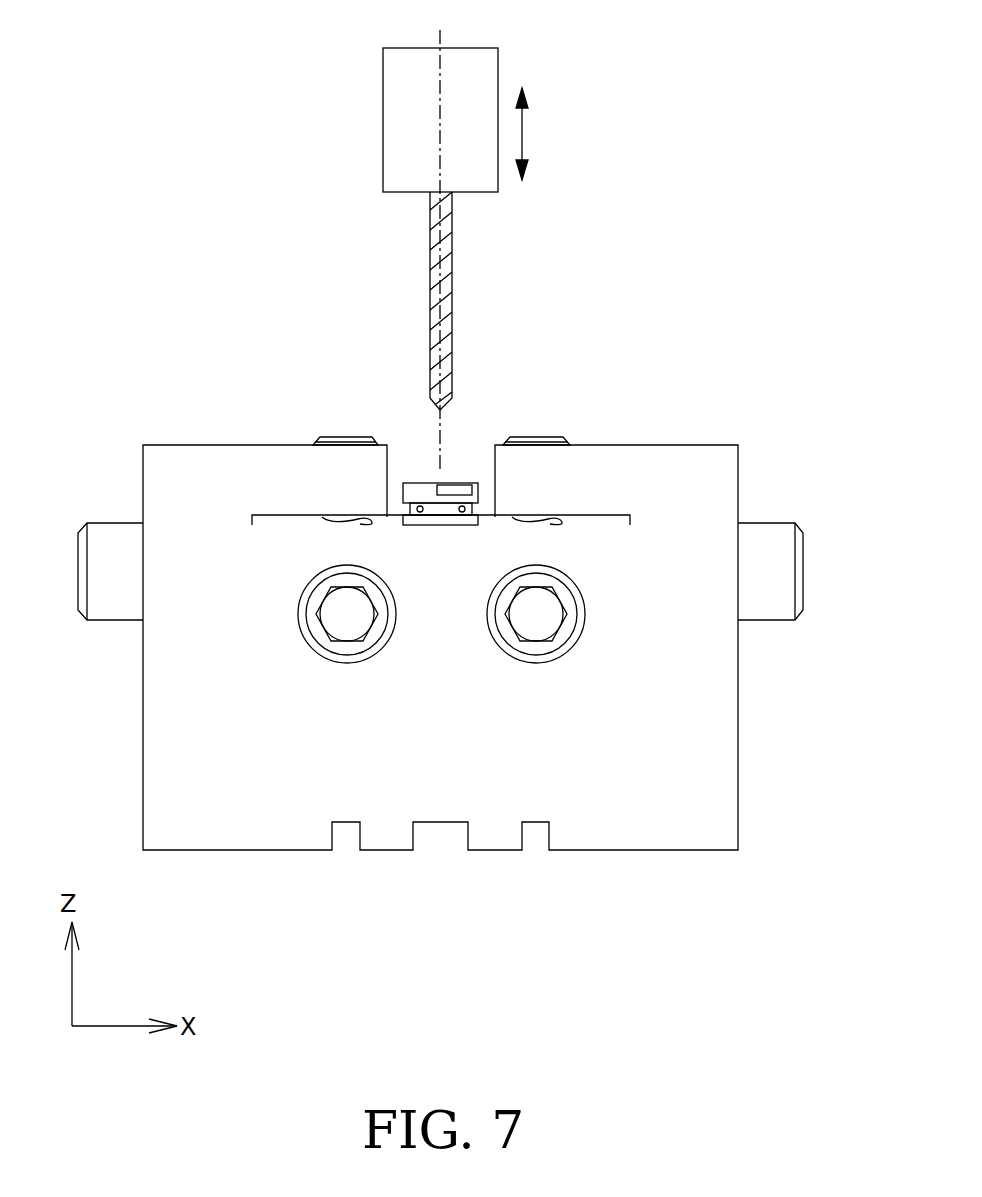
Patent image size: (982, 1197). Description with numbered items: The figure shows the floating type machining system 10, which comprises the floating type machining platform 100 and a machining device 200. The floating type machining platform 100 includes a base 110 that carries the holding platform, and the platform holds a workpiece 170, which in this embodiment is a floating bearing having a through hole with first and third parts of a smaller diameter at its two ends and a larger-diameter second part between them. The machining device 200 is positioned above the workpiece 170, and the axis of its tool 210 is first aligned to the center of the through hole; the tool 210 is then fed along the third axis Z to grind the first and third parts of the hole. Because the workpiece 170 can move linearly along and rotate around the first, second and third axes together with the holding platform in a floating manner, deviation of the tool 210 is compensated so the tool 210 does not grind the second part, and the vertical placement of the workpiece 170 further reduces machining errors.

The floating type machining system 10 is at (713, 107).
The floating type machining platform 100 is at (703, 406).
The base 110 is at (672, 822).
The workpiece 170 is at (415, 492).
The machining device 200 is at (507, 53).
The tool 210 is at (445, 354).